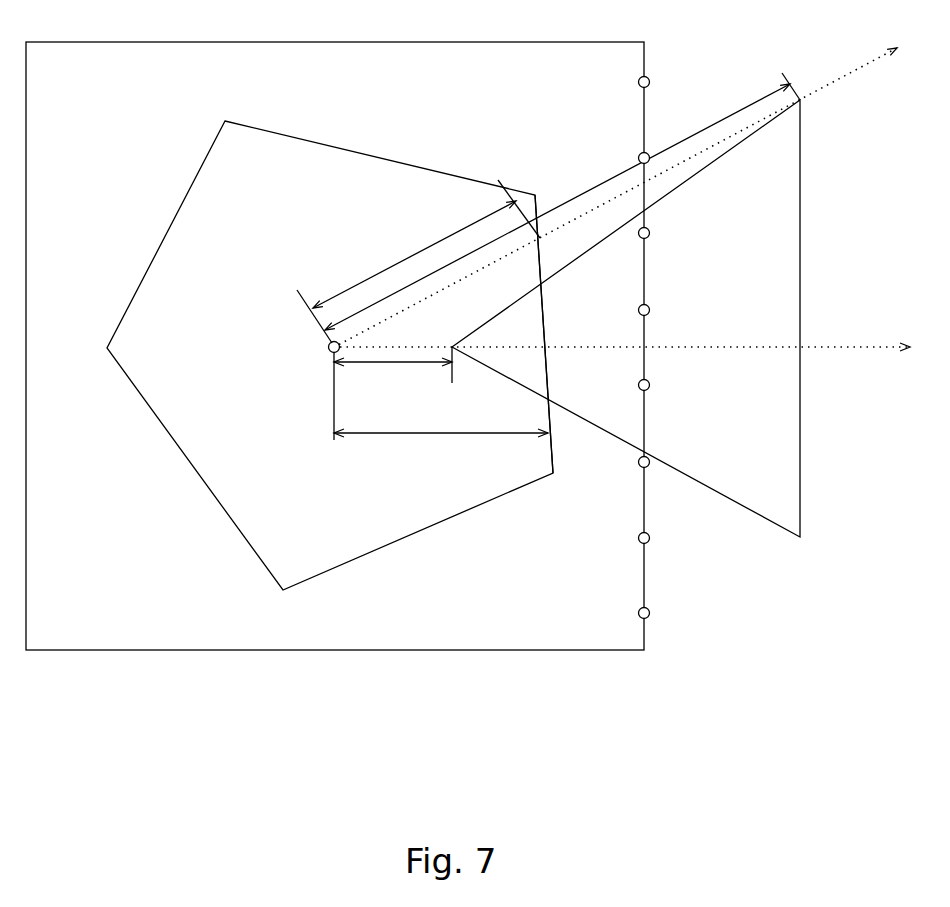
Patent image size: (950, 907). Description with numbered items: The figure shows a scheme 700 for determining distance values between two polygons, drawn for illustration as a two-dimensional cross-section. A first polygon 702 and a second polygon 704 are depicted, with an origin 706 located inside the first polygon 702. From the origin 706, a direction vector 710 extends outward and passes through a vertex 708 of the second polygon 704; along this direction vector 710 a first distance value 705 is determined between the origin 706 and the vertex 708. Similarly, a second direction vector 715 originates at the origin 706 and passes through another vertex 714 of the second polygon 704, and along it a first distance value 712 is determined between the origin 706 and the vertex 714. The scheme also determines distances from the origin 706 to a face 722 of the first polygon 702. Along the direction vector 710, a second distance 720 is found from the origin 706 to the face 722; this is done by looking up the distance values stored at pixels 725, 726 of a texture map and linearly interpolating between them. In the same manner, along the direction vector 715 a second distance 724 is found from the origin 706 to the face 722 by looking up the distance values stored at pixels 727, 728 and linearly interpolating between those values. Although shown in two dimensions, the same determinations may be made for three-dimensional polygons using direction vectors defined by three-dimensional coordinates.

The scheme 700 is at (143, 749).
The first polygon 702 is at (321, 554).
The second polygon 704 is at (788, 500).
The first distance value 705 is at (593, 187).
The origin 706 is at (329, 351).
The vertex 708 is at (800, 101).
The direction vector 710 is at (850, 72).
The first distance value 712 is at (393, 364).
The vertex 714 is at (455, 352).
The direction vector 715 is at (872, 345).
The second distance 720 is at (406, 258).
The face 722 is at (545, 318).
The second distance 724 is at (425, 436).
The pixel 725 is at (648, 154).
The pixel 726 is at (648, 234).
The pixel 727 is at (648, 309).
The pixel 728 is at (648, 386).